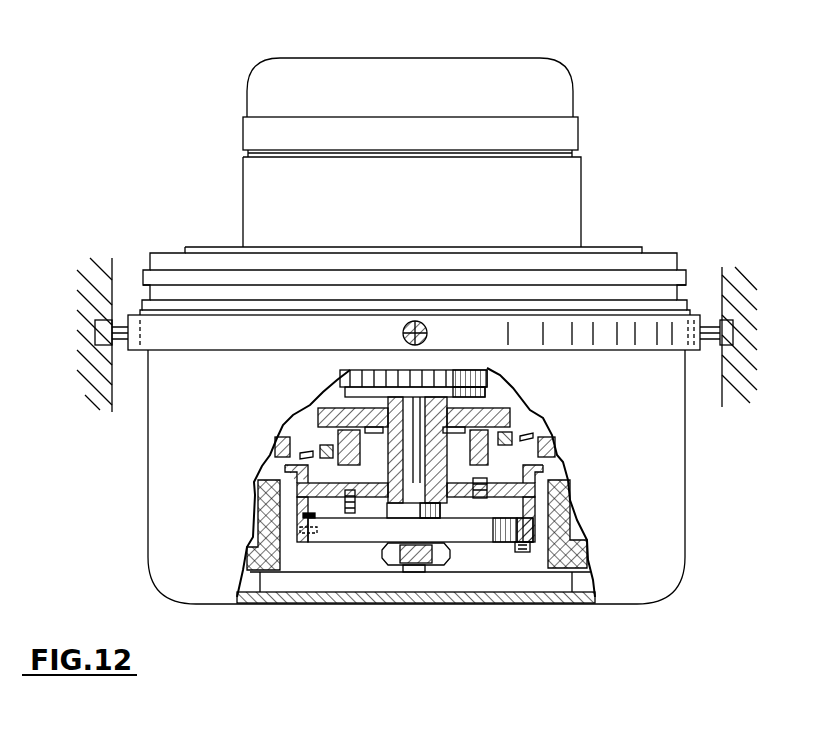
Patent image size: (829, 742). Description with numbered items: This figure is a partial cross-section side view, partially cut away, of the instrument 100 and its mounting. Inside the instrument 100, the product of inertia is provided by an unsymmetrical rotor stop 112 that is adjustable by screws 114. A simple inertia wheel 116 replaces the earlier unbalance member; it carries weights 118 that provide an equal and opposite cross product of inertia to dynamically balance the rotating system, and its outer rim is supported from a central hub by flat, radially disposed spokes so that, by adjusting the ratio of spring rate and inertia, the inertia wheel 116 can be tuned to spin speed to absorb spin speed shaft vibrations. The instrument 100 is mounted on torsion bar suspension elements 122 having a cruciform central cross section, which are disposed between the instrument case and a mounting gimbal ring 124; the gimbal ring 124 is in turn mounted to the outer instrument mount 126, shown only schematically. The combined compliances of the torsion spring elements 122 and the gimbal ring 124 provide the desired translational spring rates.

The instrument 100 is at (598, 238).
The unsymmetrical rotor stop 112 is at (536, 484).
The screws 114 is at (348, 514).
The inertia wheel 116 is at (534, 533).
The weights 118 is at (303, 515).
The torsion bar suspension elements 122 is at (120, 316).
The mounting gimbal ring 124 is at (236, 335).
The outer instrument mount 126 is at (113, 380).